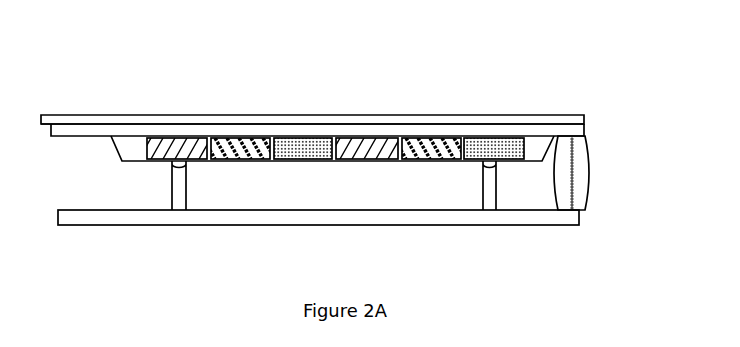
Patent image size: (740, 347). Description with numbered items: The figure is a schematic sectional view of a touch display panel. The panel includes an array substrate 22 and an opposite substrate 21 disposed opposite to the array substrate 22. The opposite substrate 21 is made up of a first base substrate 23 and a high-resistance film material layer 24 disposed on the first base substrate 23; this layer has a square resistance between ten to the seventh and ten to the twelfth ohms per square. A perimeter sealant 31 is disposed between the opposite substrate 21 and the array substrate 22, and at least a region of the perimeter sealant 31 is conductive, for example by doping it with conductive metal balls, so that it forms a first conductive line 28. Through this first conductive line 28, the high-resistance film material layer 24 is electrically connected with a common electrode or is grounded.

The opposite substrate 21 is at (255, 115).
The array substrate 22 is at (519, 226).
The first base substrate 23 is at (417, 120).
The high-resistance film material layer 24 is at (535, 130).
The first conductive line 28 is at (570, 193).
The perimeter sealant 31 is at (583, 173).